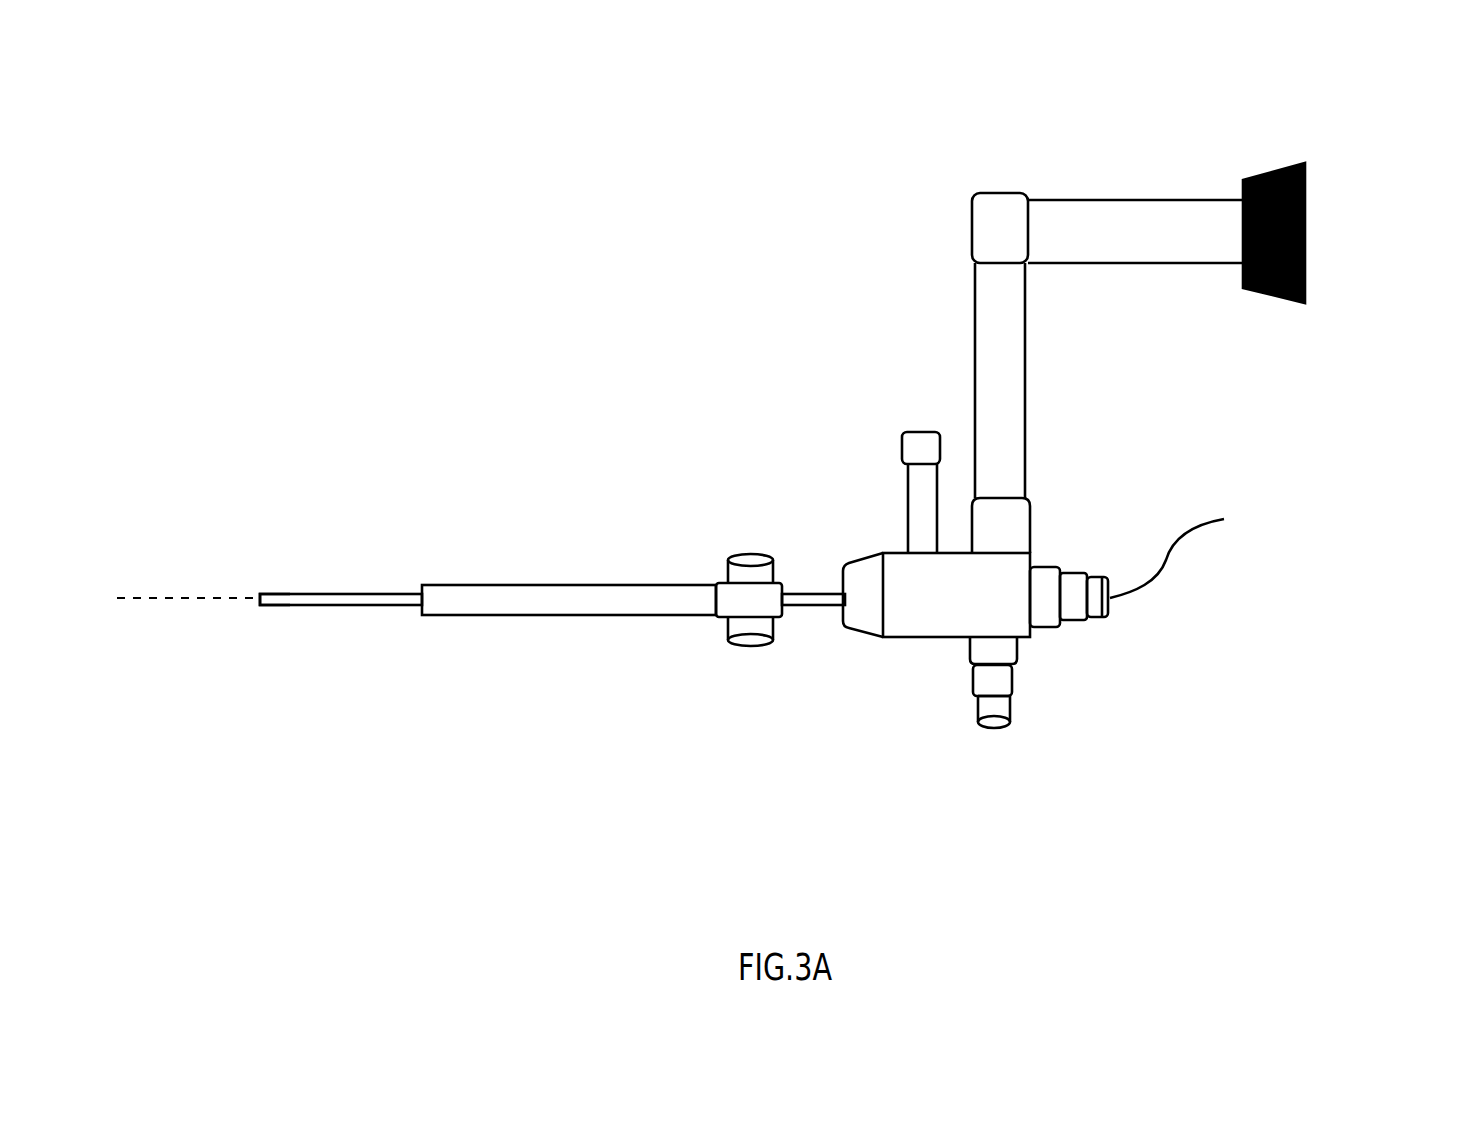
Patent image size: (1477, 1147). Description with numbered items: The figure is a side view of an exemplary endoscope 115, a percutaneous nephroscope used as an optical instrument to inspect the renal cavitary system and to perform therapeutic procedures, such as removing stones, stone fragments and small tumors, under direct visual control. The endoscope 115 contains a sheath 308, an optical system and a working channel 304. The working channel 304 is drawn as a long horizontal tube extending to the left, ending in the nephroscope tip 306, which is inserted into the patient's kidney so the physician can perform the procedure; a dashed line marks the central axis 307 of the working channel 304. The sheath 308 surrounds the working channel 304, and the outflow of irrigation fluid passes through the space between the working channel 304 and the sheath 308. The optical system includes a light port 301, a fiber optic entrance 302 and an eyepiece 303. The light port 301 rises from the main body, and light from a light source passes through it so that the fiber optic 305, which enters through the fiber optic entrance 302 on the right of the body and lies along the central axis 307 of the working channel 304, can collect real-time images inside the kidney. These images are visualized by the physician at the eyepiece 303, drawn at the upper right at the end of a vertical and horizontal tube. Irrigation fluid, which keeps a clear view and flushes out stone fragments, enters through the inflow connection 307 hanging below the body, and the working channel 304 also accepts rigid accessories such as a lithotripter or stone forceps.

The endoscope 115 is at (672, 273).
The light port 301 is at (910, 433).
The fiber optic entrance 302 is at (1247, 753).
The eyepiece 303 is at (1302, 315).
The working channel 304 is at (363, 607).
The fiber optic 305 is at (1188, 540).
The nephroscope tip 306 is at (352, 688).
The central axis / inflow connection 307 is at (1135, 905).
The sheath 308 is at (589, 596).